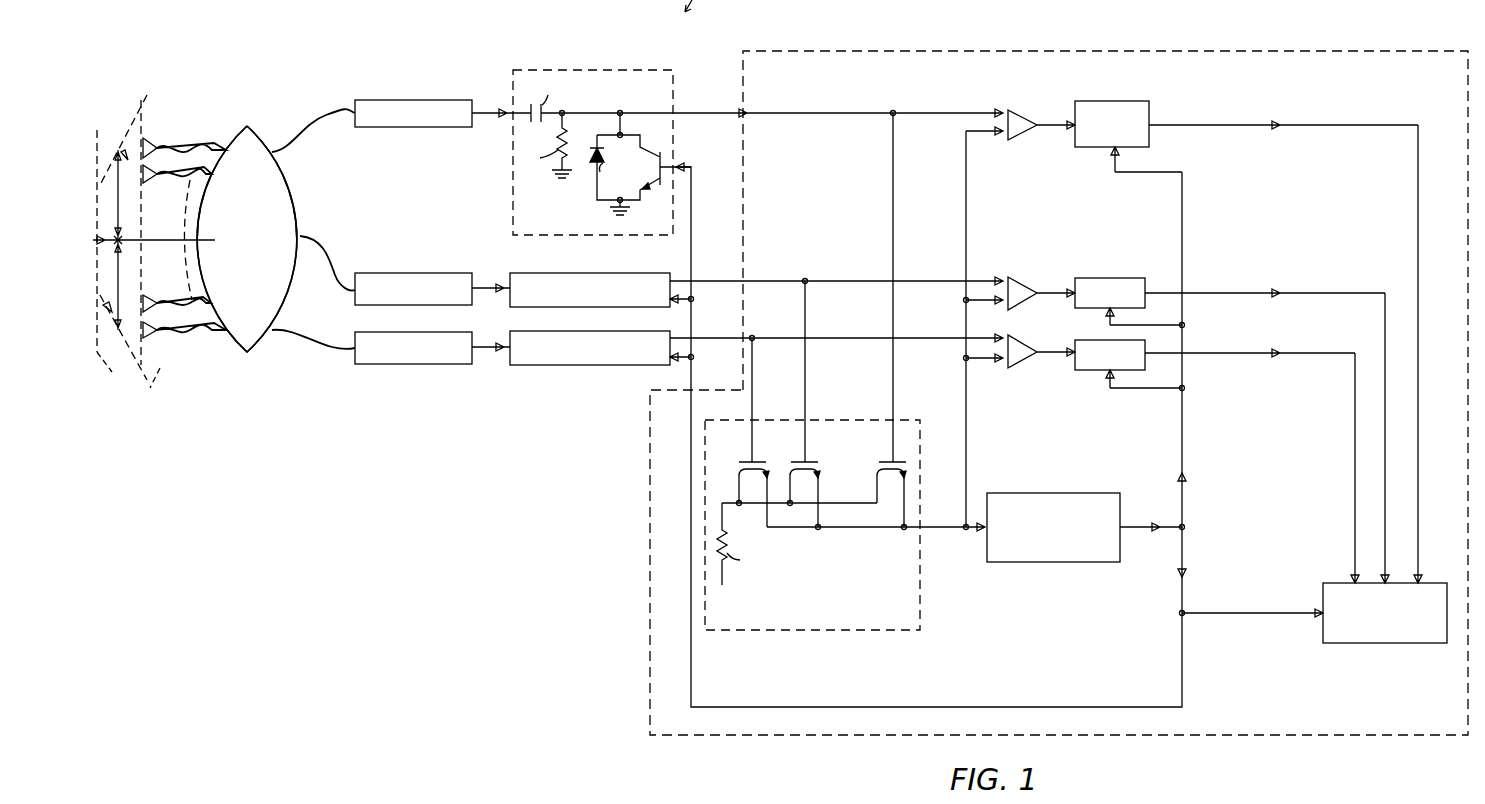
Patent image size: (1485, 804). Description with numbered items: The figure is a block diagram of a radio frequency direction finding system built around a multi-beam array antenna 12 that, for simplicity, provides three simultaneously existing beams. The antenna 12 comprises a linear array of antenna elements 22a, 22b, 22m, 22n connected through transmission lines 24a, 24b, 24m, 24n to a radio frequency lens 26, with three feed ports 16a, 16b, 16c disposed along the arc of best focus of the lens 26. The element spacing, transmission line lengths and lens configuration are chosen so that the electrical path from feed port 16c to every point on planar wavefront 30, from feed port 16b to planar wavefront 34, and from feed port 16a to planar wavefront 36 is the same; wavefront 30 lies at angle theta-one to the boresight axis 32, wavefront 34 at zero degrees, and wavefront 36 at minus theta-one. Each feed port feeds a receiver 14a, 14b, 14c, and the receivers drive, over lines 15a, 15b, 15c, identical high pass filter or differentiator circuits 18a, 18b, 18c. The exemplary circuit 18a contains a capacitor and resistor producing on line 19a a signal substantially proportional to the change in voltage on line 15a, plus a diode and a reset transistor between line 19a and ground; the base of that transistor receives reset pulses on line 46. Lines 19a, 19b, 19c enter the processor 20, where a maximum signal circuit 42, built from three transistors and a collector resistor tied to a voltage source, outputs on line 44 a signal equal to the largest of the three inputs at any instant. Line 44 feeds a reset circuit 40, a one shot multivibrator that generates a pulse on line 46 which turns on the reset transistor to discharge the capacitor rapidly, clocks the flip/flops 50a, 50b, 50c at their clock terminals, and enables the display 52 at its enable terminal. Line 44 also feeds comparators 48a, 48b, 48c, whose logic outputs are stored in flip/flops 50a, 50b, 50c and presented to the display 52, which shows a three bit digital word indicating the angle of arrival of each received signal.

The multi-beam array antenna 12 is at (262, 98).
The receiver 14a is at (396, 100).
The receiver 14b is at (388, 273).
The receiver 14c is at (374, 332).
The line 15a is at (486, 108).
The line 15b is at (482, 285).
The line 15c is at (484, 345).
The feed port 16a is at (278, 146).
The feed port 16b is at (308, 236).
The feed port 16c is at (285, 332).
The high pass filter or differentiator circuit 18a is at (598, 68).
The high pass filter or differentiator circuit 18b is at (572, 273).
The high pass filter or differentiator circuit 18c is at (577, 331).
The line 19a is at (705, 108).
The line 19b is at (720, 281).
The line 19c is at (720, 338).
The processor 20 is at (780, 50).
The antenna element 22a is at (152, 140).
The antenna element 22b is at (150, 180).
The antenna element 22m is at (152, 297).
The antenna element 22n is at (153, 340).
The transmission line 24a is at (198, 140).
The transmission line 24b is at (186, 180).
The transmission line 24m is at (178, 306).
The transmission line 24n is at (182, 333).
The radio frequency lens 26 is at (258, 243).
The planar wavefront 30 is at (145, 100).
The boresight axis 32 is at (168, 242).
The planar wavefront 34 is at (110, 372).
The planar wavefront 36 is at (145, 391).
The reset circuit 40 is at (1060, 493).
The maximum signal circuit 42 is at (776, 632).
The line 44 is at (940, 530).
The line 46 is at (1137, 525).
The comparator 48a is at (1022, 117).
The comparator 48b is at (1028, 285).
The comparator 48c is at (1027, 345).
The flip/flop 50a is at (1115, 101).
The flip/flop 50b is at (1088, 278).
The flip/flop 50c is at (1092, 372).
The display 52 is at (1432, 583).